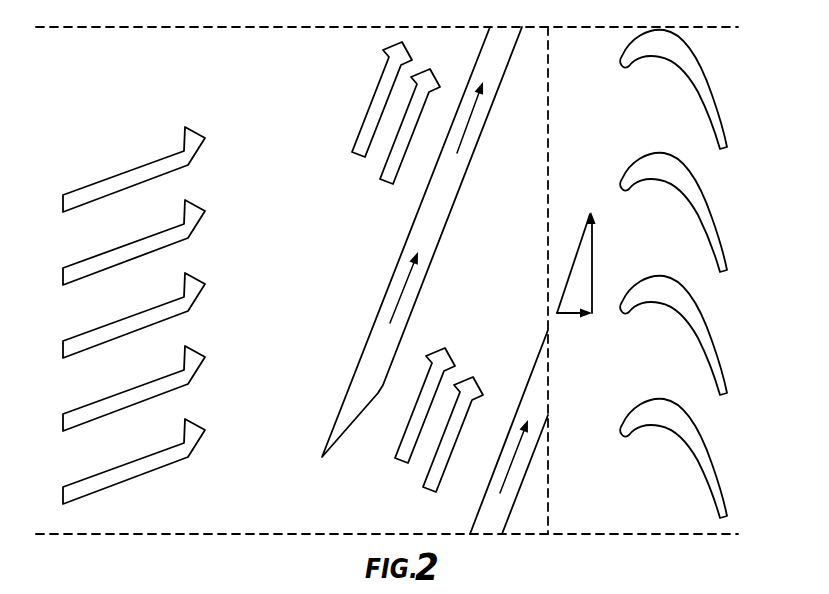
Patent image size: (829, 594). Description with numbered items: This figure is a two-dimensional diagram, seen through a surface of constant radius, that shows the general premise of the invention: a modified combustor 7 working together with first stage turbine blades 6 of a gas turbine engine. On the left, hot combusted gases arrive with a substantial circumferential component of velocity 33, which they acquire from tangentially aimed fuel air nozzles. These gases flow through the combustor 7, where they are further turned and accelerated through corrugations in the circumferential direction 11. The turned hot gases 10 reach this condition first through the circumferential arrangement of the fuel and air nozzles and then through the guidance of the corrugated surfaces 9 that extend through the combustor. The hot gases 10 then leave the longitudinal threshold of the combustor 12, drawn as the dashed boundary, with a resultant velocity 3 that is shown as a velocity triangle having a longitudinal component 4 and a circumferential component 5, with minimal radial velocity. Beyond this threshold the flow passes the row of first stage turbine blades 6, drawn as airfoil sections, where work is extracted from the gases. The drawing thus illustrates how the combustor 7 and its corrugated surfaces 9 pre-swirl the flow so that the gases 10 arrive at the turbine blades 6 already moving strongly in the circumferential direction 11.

The resultant velocity 3 is at (567, 265).
The longitudinal component 4 is at (568, 322).
The circumferential component 5 is at (597, 269).
The first stage turbine blades 6 is at (718, 208).
The modified combustor 7 is at (287, 32).
The corrugated surfaces 9 is at (528, 364).
The turned hot gases 10 is at (398, 480).
The circumferential direction 11 is at (401, 287).
The longitudinal threshold of the combustor 12 is at (557, 123).
The circumferential component of velocity 33 is at (143, 139).